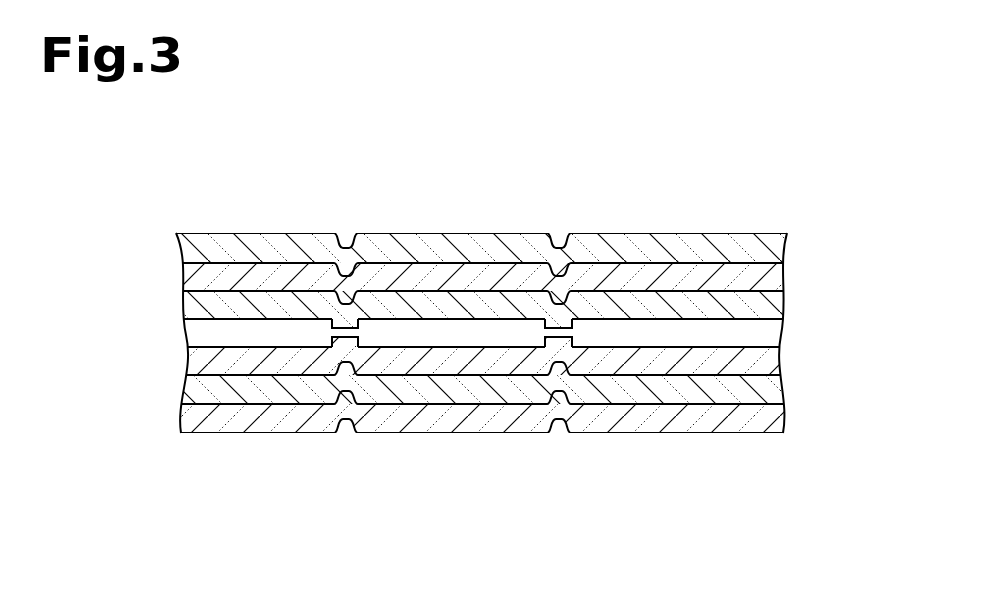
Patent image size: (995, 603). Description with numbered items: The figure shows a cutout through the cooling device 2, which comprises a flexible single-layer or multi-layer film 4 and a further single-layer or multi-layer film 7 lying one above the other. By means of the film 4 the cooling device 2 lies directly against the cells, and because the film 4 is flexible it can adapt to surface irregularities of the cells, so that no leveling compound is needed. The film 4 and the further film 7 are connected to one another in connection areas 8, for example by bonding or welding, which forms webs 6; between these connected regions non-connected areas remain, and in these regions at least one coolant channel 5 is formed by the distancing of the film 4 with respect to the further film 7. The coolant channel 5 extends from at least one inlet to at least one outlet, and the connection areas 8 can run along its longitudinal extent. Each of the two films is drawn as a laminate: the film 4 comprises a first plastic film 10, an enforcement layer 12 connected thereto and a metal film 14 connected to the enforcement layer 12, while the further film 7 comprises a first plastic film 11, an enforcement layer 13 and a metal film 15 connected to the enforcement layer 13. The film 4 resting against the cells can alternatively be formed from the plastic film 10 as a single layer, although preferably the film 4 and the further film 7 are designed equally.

The cooling device 2 is at (772, 220).
The film 4 is at (446, 447).
The coolant channel 5 is at (685, 333).
The web 6 is at (345, 338).
The further single-layer or multi-layer film 7 is at (615, 228).
The connection area 8 is at (562, 345).
The first plastic film 10 is at (170, 363).
The first plastic film 11 is at (170, 305).
The enforcement layer 12 is at (800, 388).
The enforcement layer 13 is at (785, 275).
The metal film 14 is at (168, 420).
The metal film 15 is at (168, 247).